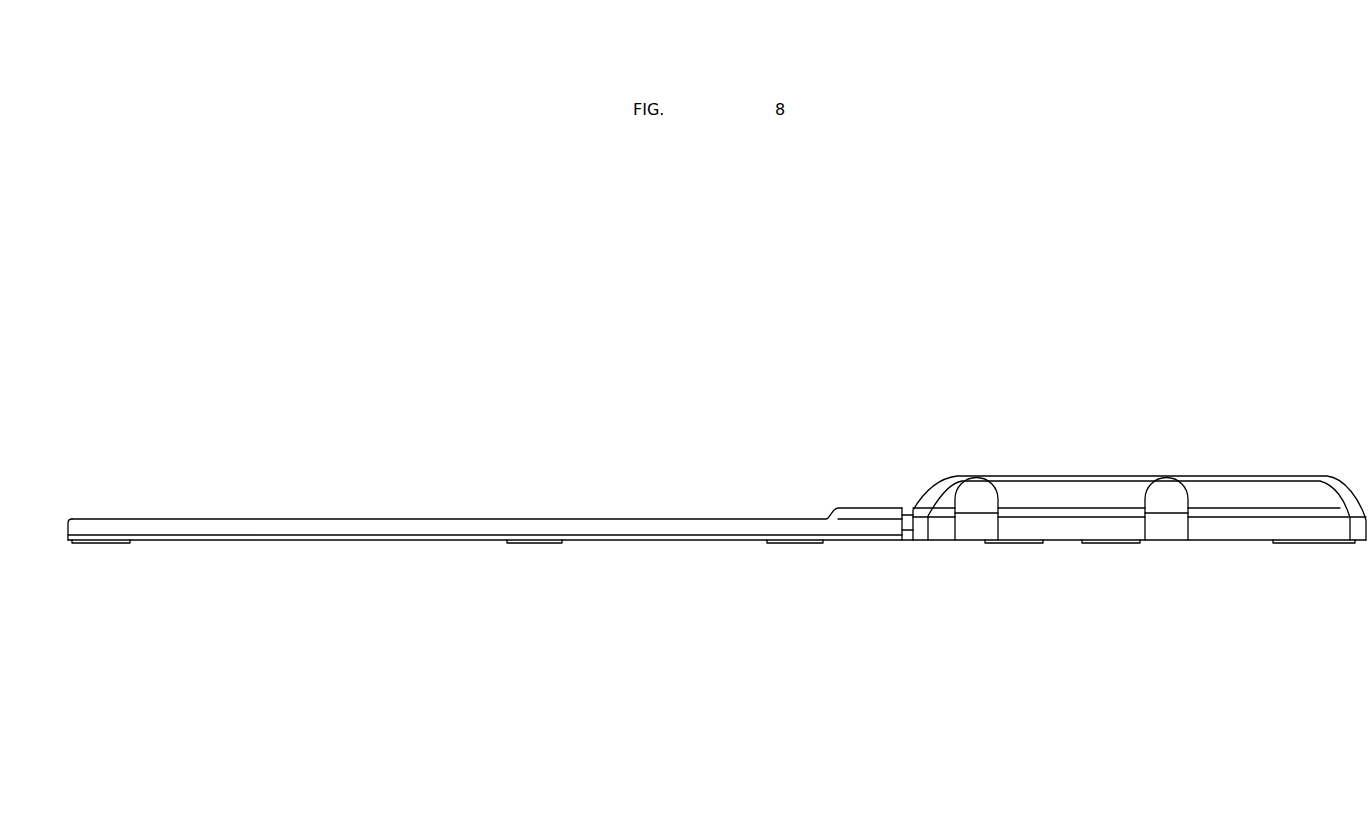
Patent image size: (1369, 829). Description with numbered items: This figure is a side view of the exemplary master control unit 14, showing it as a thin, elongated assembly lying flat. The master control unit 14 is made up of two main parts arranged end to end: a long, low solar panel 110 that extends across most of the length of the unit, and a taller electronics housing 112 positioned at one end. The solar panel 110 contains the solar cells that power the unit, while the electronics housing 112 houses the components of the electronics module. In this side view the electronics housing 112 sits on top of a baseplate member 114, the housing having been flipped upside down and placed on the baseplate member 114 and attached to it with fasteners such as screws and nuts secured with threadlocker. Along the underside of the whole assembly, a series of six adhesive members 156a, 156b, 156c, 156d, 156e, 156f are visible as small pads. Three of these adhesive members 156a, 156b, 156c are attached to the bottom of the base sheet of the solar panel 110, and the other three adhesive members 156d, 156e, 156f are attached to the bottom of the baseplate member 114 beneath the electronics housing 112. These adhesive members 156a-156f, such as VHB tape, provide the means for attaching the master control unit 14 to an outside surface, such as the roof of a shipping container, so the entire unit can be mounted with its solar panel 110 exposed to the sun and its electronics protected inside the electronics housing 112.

The master control unit 14 is at (166, 322).
The solar panel 110 is at (428, 519).
The electronics housing 112 is at (1097, 475).
The baseplate member 114 is at (1203, 537).
The adhesive member 156a is at (100, 543).
The adhesive member 156b is at (536, 543).
The adhesive member 156c is at (795, 543).
The adhesive member 156d is at (1014, 543).
The adhesive member 156e is at (1112, 543).
The adhesive member 156f is at (1322, 543).